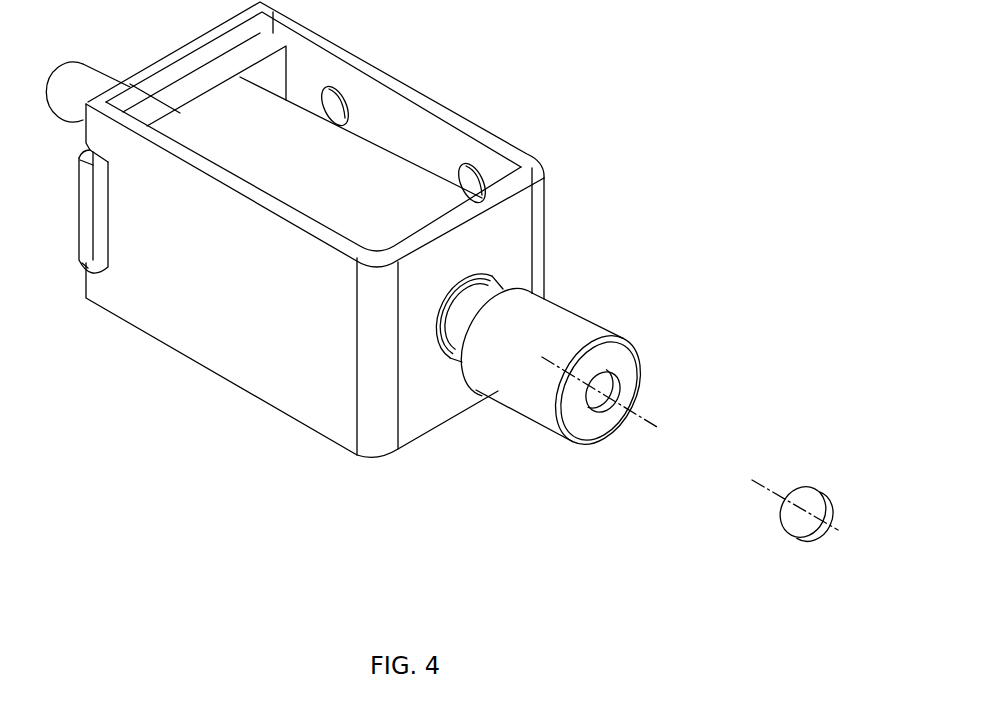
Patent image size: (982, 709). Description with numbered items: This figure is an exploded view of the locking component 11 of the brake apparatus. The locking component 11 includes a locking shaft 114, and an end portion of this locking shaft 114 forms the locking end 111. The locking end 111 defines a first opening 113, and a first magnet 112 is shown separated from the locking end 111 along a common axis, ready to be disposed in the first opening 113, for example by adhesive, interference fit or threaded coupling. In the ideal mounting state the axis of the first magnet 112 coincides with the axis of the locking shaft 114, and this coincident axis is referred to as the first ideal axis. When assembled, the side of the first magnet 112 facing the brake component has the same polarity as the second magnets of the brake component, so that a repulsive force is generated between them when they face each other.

The locking component 11 is at (459, 278).
The locking end 111 is at (571, 413).
The first magnet 112 is at (812, 508).
The first opening 113 is at (607, 386).
The locking shaft 114 is at (552, 310).